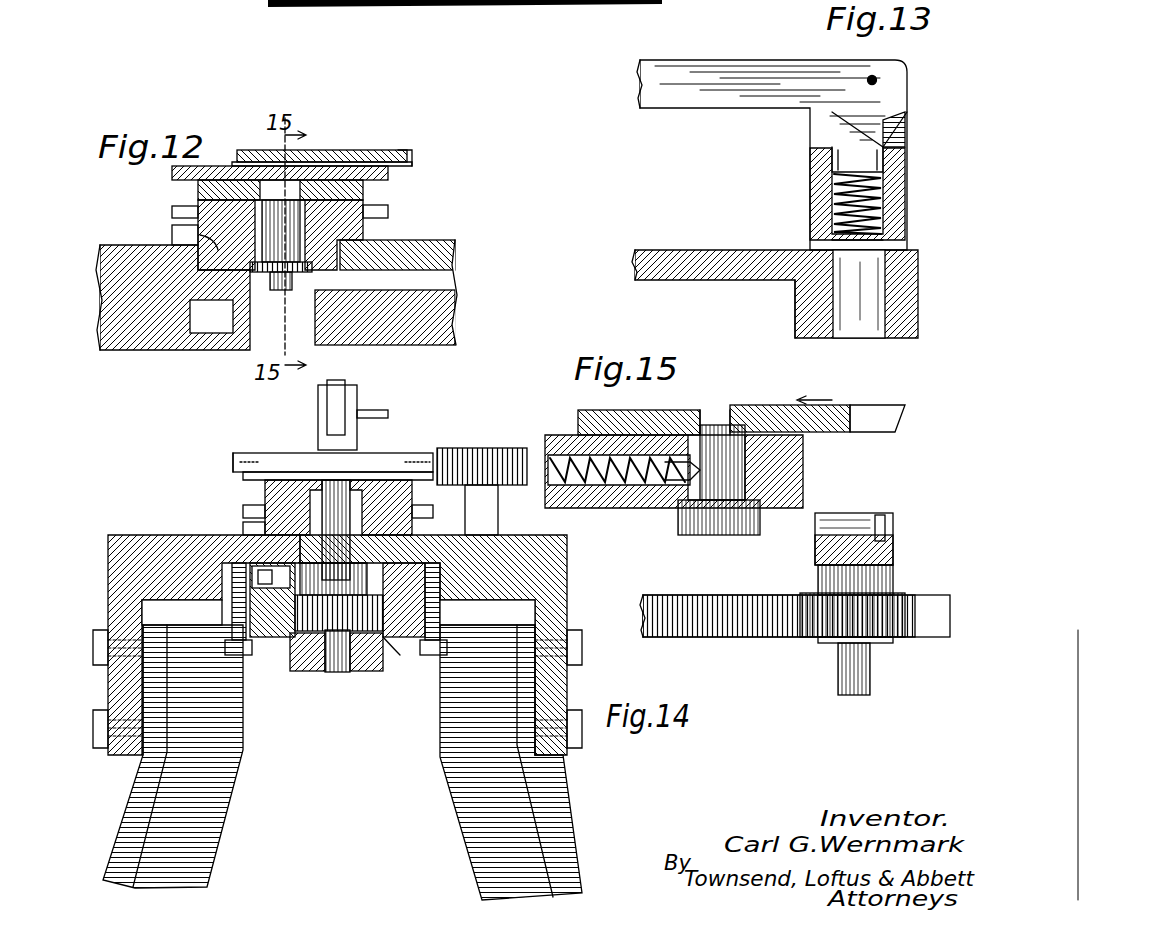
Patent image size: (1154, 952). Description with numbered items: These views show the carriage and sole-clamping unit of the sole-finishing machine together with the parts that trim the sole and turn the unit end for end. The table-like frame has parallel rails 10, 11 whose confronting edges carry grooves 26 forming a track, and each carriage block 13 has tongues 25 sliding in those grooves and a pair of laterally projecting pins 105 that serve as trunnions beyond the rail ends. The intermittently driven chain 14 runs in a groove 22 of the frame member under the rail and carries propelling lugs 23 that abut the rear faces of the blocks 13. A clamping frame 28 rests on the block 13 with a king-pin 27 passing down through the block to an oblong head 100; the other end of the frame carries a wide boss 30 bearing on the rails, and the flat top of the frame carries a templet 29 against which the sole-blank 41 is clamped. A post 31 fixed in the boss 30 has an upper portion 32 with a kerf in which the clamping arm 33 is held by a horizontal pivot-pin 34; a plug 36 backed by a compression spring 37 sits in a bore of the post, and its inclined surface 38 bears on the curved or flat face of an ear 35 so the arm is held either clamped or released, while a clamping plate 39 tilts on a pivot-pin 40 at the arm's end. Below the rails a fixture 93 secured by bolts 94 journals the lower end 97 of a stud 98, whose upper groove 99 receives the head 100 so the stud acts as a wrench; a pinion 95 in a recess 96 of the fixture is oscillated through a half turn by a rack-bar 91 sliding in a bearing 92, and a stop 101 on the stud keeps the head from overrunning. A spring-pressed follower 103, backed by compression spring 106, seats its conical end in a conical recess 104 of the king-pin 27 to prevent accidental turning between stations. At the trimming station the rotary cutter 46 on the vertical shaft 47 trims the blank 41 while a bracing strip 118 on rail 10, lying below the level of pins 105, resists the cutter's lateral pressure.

In FIG. 12, the rail 10 is at (118, 350).
In FIG. 14, the rail 10 is at (136, 535).
In FIG. 12, the rail 11 is at (436, 262).
In FIG. 14, the rail 11 is at (556, 550).
In FIG. 12, the block 13 is at (373, 234).
In FIG. 15, the block 13 is at (805, 491).
In FIG. 14, the chain 14 is at (238, 565).
In FIG. 12, the groove 22 is at (222, 318).
In FIG. 14, the groove 22 is at (284, 640).
In FIG. 14, the propelling lug 23 is at (308, 648).
In FIG. 12, the tongue 25 is at (205, 240).
In FIG. 12, the groove 26 is at (440, 292).
In FIG. 15, the king-pin 27 is at (724, 468).
In FIG. 14, the king-pin 27 is at (353, 488).
In FIG. 12, the clamping frame 28 is at (364, 188).
In FIG. 13, the clamping frame 28 is at (672, 250).
In FIG. 15, the clamping frame 28 is at (890, 420).
In FIG. 14, the clamping frame 28 is at (290, 482).
In FIG. 12, the templet 29 is at (390, 172).
In FIG. 14, the templet 29 is at (278, 475).
In FIG. 13, the boss 30 is at (806, 308).
In FIG. 13, the post 31 is at (860, 320).
In FIG. 13, the upper portion of post 32 is at (895, 198).
In FIG. 13, the clamping arm 33 is at (712, 80).
In FIG. 13, the pivot-pin 34 is at (877, 80).
In FIG. 13, the ear 35 is at (834, 122).
In FIG. 13, the plug 36 is at (848, 150).
In FIG. 13, the compression spring 37 is at (833, 214).
In FIG. 13, the inclined surface 38 is at (882, 140).
In FIG. 12, the clamping plate 39 is at (350, 150).
In FIG. 14, the pivot-pin 40 is at (360, 412).
In FIG. 12, the sole-blank 41 is at (409, 155).
In FIG. 14, the sole-blank 41 is at (244, 460).
In FIG. 14, the trimming cutter 46 is at (462, 456).
In FIG. 14, the shaft 47 is at (500, 505).
In FIG. 15, the rack-bar 91 is at (940, 605).
In FIG. 14, the rack-bar 91 is at (410, 646).
In FIG. 14, the bearing 92 is at (382, 645).
In FIG. 14, the fixture 93 is at (404, 656).
In FIG. 14, the bolt 94 is at (226, 612).
In FIG. 15, the pinion 95 is at (822, 610).
In FIG. 14, the pinion 95 is at (322, 630).
In FIG. 14, the recess 96 is at (364, 660).
In FIG. 15, the lower end of stud 97 is at (860, 682).
In FIG. 14, the lower end of stud 97 is at (337, 660).
In FIG. 15, the stud 98 is at (840, 580).
In FIG. 14, the stud 98 is at (350, 582).
In FIG. 15, the groove 99 is at (864, 524).
In FIG. 14, the groove 99 is at (345, 548).
In FIG. 12, the head 100 is at (274, 286).
In FIG. 15, the head 100 is at (735, 535).
In FIG. 15, the stop 101 is at (890, 530).
In FIG. 15, the follower 103 is at (676, 462).
In FIG. 15, the conical recess 104 is at (736, 410).
In FIG. 12, the pin 105 is at (172, 216).
In FIG. 14, the pin 105 is at (244, 511).
In FIG. 15, the compression spring 106 is at (622, 508).
In FIG. 12, the bracing strip 118 is at (172, 236).
In FIG. 14, the bracing strip 118 is at (244, 528).